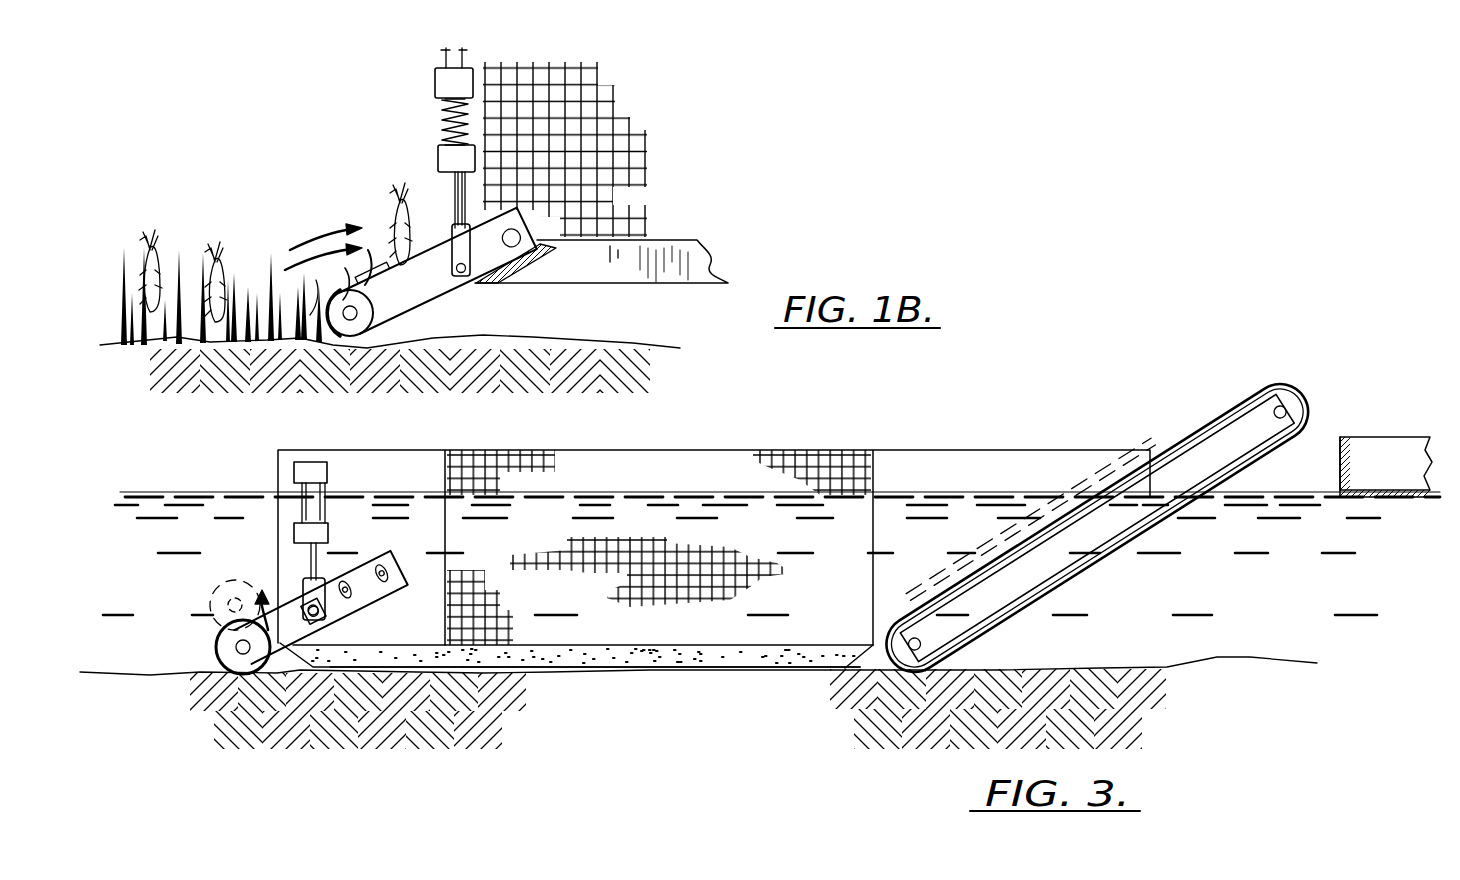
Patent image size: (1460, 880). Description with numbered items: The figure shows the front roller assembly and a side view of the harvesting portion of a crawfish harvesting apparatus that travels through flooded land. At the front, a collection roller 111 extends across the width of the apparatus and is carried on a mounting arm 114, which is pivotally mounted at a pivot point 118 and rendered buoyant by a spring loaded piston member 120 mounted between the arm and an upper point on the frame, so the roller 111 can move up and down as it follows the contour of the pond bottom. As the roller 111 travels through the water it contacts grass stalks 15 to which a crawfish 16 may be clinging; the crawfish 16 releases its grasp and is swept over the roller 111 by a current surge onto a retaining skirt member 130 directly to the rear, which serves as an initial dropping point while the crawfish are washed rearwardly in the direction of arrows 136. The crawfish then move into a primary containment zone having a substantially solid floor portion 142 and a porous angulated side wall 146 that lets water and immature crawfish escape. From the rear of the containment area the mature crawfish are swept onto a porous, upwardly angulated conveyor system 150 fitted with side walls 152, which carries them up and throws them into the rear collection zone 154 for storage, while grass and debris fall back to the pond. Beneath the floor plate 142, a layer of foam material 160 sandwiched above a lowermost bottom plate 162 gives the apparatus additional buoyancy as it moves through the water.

In FIG. 1B, the grass stalks 15 is at (250, 241).
In FIG. 1B, the crawfish 16 is at (175, 236).
In FIG. 1B, the collection roller 111 is at (372, 335).
In FIG. 3, the collection roller 111 is at (215, 652).
In FIG. 1B, the mounting arm 114 is at (420, 282).
In FIG. 3, the mounting arm 114 is at (372, 586).
In FIG. 1B, the pivot point 118 is at (538, 244).
In FIG. 1B, the spring loaded piston member 120 is at (438, 153).
In FIG. 3, the spring loaded piston member 120 is at (295, 513).
In FIG. 1B, the retaining skirt member 130 is at (372, 250).
In FIG. 1B, the arrows 136 is at (312, 233).
In FIG. 1B, the floor portion 142 is at (646, 274).
In FIG. 1B, the side wall 146 is at (582, 143).
In FIG. 3, the side wall 146 is at (742, 576).
In FIG. 3, the conveyor system 150 is at (1212, 421).
In FIG. 3, the side walls 152 is at (980, 470).
In FIG. 3, the rear collection zone 154 is at (1383, 461).
In FIG. 3, the layer of foam material 160 is at (665, 658).
In FIG. 3, the bottom plate 162 is at (723, 670).